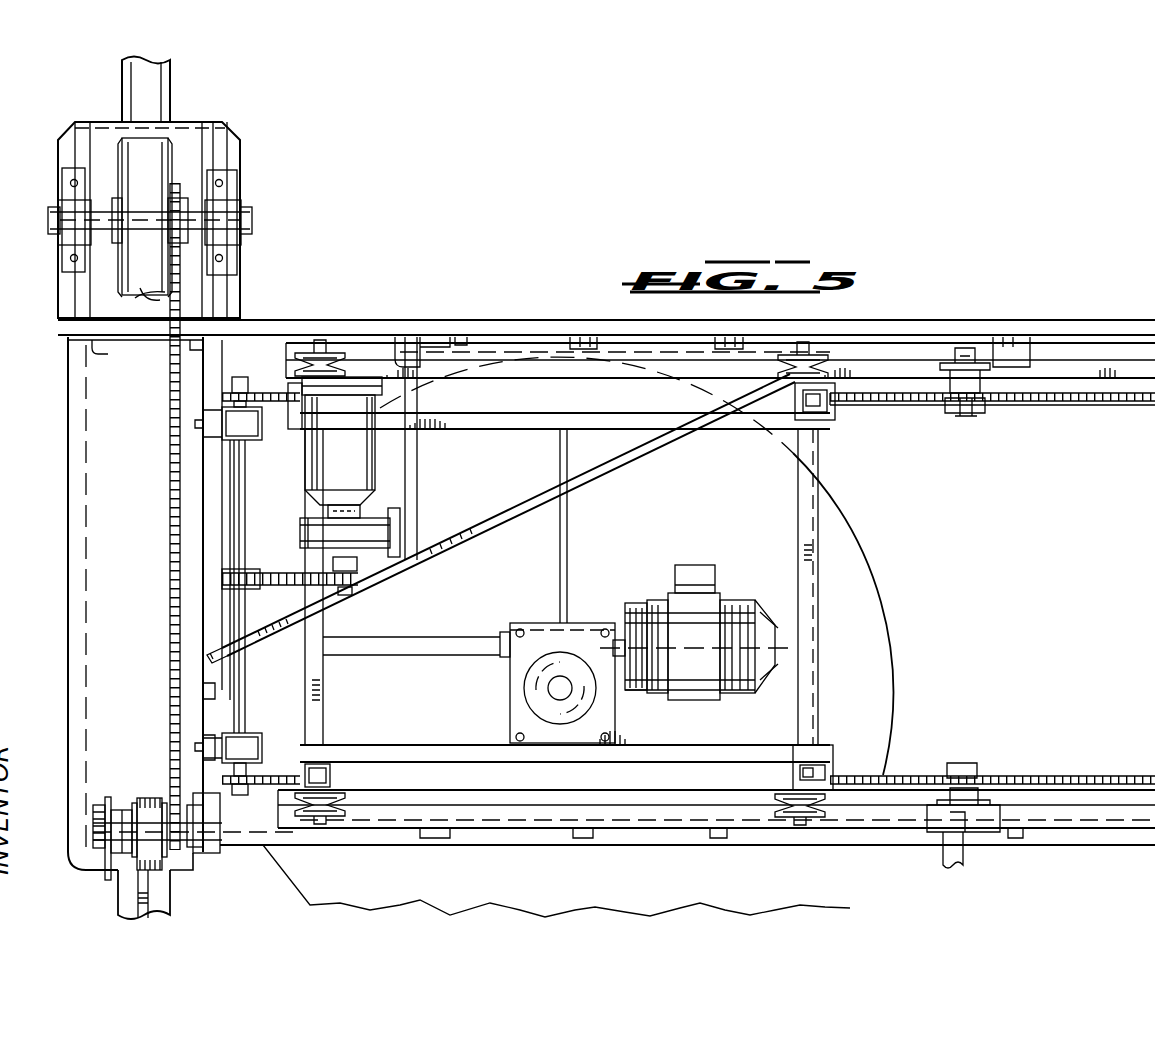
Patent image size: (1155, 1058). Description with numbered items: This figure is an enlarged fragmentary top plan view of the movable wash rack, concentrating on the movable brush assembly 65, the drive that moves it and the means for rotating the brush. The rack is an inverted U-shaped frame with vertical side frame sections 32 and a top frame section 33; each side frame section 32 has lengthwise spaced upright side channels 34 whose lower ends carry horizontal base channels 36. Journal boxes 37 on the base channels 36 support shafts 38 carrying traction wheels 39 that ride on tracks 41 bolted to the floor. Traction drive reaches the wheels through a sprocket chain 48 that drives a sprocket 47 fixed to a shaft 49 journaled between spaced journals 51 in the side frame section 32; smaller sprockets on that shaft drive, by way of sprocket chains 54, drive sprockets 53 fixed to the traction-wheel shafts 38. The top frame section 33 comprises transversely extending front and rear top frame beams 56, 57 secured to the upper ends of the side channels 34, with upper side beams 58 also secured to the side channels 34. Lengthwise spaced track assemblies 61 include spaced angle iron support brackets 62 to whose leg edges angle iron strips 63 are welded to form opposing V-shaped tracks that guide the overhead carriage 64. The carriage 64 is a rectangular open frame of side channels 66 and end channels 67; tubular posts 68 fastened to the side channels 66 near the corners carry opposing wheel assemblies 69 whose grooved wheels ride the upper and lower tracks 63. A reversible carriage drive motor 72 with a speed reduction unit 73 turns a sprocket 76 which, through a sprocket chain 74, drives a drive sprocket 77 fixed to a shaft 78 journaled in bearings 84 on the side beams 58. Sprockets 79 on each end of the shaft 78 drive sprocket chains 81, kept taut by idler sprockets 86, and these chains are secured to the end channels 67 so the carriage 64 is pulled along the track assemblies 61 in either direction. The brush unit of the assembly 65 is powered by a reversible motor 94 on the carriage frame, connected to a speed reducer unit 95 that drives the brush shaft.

The vertical side frame section 32 is at (66, 545).
The top frame section 33 is at (972, 318).
The upright side channel 34 is at (90, 348).
The base channel 36 is at (215, 152).
The journal box 37 is at (235, 210).
The shaft 38 is at (244, 222).
The traction wheel 39 is at (160, 294).
The track 41 is at (118, 90).
The sprocket 47 is at (146, 798).
The sprocket chain 48 is at (160, 875).
The shaft 49 is at (115, 815).
The journal 51 is at (92, 848).
The drive sprocket 53 is at (170, 202).
The sprocket chain 54 is at (172, 548).
The front top frame beam 56 is at (518, 846).
The rear top frame beam 57 is at (816, 326).
The upper side beam 58 is at (190, 458).
The track assembly 61 is at (1030, 385).
The angle iron support bracket 62 is at (398, 340).
The angle iron strip 63 is at (505, 376).
The overhead carriage 64 is at (822, 710).
The movable brush assembly 65 is at (865, 642).
The side channel 66 is at (768, 430).
The end channel 67 is at (315, 672).
The tubular post 68 is at (805, 420).
The wheel assembly 69 is at (326, 342).
The carriage drive motor 72 is at (355, 470).
The speed reduction unit 73 is at (368, 532).
The sprocket chain 74 is at (315, 586).
The sprocket 76 is at (362, 582).
The drive sprocket 77 is at (248, 574).
The shaft 78 is at (243, 500).
The sprocket 79 is at (255, 392).
The drive sprocket chain 81 is at (270, 390).
The bearing 84 is at (235, 415).
The idler sprocket 86 is at (982, 412).
The reversible motor 94 is at (730, 612).
The speed reducer unit 95 is at (520, 694).